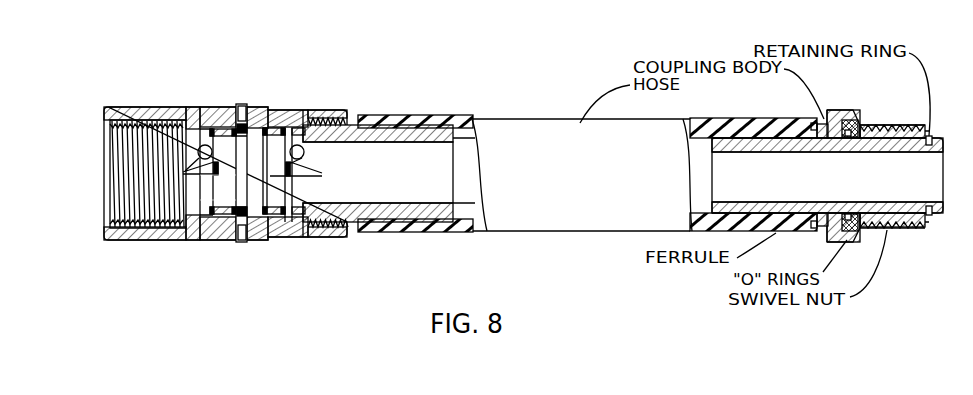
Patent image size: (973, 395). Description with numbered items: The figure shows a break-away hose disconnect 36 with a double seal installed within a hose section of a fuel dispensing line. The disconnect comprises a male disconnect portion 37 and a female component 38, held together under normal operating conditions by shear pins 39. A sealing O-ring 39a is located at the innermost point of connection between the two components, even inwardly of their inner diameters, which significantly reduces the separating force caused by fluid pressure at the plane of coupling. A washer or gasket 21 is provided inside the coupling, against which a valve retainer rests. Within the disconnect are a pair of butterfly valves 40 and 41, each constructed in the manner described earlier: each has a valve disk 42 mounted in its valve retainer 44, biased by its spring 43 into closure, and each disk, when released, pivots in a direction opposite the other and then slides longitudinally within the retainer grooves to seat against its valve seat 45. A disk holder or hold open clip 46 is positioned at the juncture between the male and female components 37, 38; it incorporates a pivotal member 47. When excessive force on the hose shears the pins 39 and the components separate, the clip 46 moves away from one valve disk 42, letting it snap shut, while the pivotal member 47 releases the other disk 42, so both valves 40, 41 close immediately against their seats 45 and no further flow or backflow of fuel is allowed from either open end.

The washer or gasket 21 is at (284, 187).
The hose disconnect 36 is at (428, 103).
The male disconnect portion 37 is at (150, 109).
The female component 38 is at (204, 109).
The shear pins 39 is at (240, 105).
The sealing O-ring 39a is at (258, 218).
The butterfly valve 40 is at (207, 198).
The butterfly valve 41 is at (317, 218).
The valve disk 42 is at (188, 173).
The spring 43 is at (196, 157).
The valve retainer 44 is at (200, 138).
The valve seat 45 is at (297, 120).
The hold open clip 46 is at (245, 192).
The pivotal member 47 is at (252, 163).